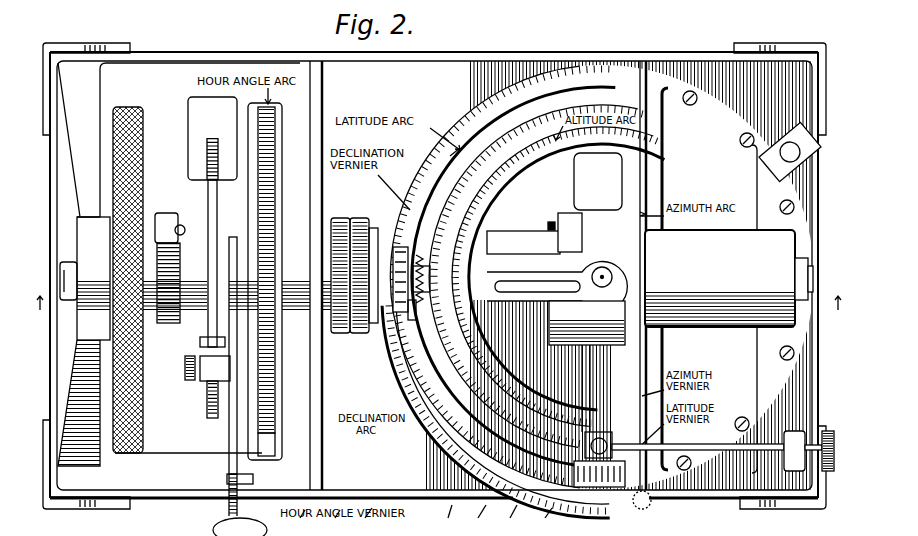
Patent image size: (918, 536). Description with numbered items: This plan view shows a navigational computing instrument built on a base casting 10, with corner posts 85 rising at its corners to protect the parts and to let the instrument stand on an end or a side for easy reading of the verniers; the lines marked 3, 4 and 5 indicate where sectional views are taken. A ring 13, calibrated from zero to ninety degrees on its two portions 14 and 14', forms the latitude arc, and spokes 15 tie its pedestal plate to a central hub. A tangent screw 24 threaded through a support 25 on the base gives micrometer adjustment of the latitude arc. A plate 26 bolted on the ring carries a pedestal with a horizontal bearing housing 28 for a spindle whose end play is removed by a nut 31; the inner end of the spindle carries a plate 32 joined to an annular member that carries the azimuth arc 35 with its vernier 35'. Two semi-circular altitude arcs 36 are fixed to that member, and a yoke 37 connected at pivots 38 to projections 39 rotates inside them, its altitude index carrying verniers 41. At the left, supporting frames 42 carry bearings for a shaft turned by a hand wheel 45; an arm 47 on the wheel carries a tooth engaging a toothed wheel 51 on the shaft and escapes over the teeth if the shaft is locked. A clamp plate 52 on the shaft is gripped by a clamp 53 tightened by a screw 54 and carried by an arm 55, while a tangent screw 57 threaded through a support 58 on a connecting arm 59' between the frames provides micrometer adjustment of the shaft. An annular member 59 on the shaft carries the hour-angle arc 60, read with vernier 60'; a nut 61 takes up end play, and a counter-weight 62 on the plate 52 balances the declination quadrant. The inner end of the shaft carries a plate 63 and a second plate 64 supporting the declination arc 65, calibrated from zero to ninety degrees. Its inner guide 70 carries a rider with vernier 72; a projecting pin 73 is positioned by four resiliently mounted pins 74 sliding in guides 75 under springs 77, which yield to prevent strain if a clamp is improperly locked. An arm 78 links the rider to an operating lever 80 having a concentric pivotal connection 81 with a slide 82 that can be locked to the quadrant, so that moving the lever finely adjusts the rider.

The section line 3 is at (438, 313).
The section line 4 is at (618, 0).
The section line 5 is at (170, 0).
The base casting 10 is at (474, 49).
The ring 13 is at (470, 117).
The latitude arc portion 14 is at (527, 276).
The latitude arc portion 14' is at (434, 144).
The spokes 15 is at (582, 373).
The tangent screw 24 is at (705, 455).
The support 25 is at (780, 430).
The plate 26 is at (672, 82).
The horizontal bearing housing 28 is at (720, 278).
The nut 31 is at (798, 278).
The plate 32 is at (564, 214).
The azimuth arc 35 is at (677, 160).
The azimuth vernier 35' is at (675, 396).
The altitude arcs 36 is at (581, 181).
The yoke 37 is at (573, 265).
The pivots 38 is at (613, 272).
The projections 39 is at (613, 284).
The verniers 41 is at (488, 232).
The supporting frames 42 is at (102, 85).
The hand wheel 45 is at (143, 132).
The arm 47 is at (165, 214).
The toothed wheel 51 is at (167, 293).
The clamp plate 52 is at (218, 197).
The clamp 53 is at (207, 373).
The screw 54 is at (187, 380).
The clamp arm 55 is at (228, 276).
The tangent screw 57 is at (233, 438).
The support 58 is at (228, 479).
The annular member 59 is at (277, 281).
The connecting arm 59' is at (216, 525).
The hour-angle arc 60 is at (282, 268).
The hour-angle vernier 60' is at (284, 441).
The nut 61 is at (72, 262).
The counter-weight 62 is at (190, 137).
The plate 63 is at (341, 218).
The second plate 64 is at (358, 218).
The declination arc 65 is at (430, 445).
The inner guide 70 is at (542, 522).
The declination vernier 72 is at (398, 318).
The projecting pin 73 is at (473, 520).
The pins 74 is at (505, 520).
The guides 75 is at (442, 520).
The springs 77 is at (430, 300).
The arm 78 is at (364, 522).
The operating lever 80 is at (408, 360).
The pivotal connection 81 is at (339, 523).
The slide 82 is at (306, 523).
The corner posts 85 is at (118, 35).